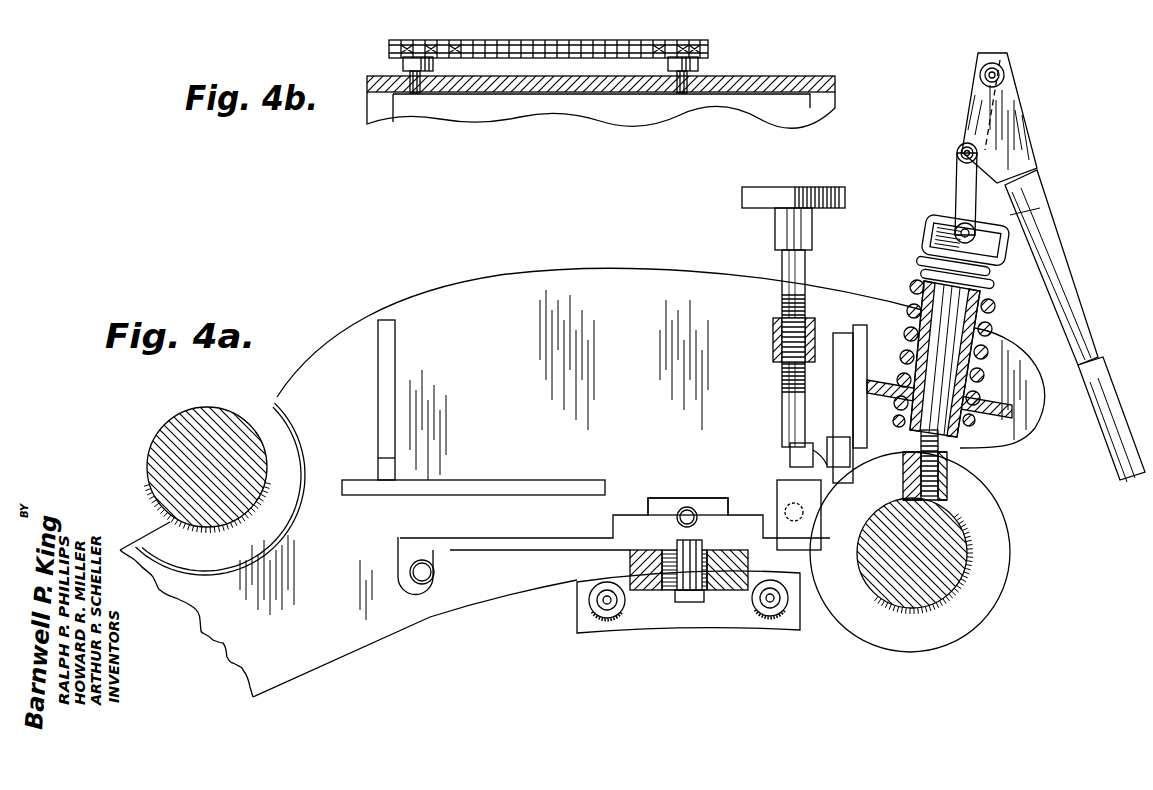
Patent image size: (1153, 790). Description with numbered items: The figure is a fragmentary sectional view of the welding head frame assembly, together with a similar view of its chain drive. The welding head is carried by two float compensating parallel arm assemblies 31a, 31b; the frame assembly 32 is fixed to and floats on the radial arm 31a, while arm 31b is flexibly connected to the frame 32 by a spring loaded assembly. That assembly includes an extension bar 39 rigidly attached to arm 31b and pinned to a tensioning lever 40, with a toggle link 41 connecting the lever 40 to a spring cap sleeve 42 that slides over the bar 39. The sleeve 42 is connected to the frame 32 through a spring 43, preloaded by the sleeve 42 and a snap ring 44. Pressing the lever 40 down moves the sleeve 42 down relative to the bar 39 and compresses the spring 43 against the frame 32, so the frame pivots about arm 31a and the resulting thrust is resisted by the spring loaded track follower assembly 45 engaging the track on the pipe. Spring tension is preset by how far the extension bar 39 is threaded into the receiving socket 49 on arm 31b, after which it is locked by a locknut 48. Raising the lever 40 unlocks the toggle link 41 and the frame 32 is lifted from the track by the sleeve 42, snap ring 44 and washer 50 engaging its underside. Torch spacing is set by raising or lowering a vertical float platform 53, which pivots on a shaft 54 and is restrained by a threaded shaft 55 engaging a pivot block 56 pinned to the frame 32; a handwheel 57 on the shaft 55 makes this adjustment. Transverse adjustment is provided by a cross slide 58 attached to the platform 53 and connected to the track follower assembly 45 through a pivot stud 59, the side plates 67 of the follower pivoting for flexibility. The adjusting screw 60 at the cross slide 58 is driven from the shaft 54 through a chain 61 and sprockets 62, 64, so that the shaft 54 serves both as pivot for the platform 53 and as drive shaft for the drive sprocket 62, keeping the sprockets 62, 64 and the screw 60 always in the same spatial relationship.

In FIG. 4a, the float compensating parallel arm assembly 31a is at (178, 462).
In FIG. 4a, the float compensating parallel arm assembly 31b is at (968, 567).
In FIG. 4a, the frame assembly 32 is at (447, 292).
In FIG. 4a, the extension bar 39 is at (1003, 70).
In FIG. 4a, the tensioning lever 40 is at (1060, 276).
In FIG. 4a, the toggle link 41 is at (965, 188).
In FIG. 4a, the spring cap sleeve 42 is at (928, 242).
In FIG. 4a, the spring 43 is at (995, 308).
In FIG. 4a, the snap ring 44 is at (955, 432).
In FIG. 4a, the track follower assembly 45 is at (643, 633).
In FIG. 4a, the locknut 48 is at (905, 470).
In FIG. 4a, the receiving socket 49 is at (945, 483).
In FIG. 4a, the washer 50 is at (898, 418).
In FIG. 4a, the vertical float platform 53 is at (545, 540).
In FIG. 4b, the shaft 54 is at (415, 93).
In FIG. 4a, the shaft 54 is at (416, 576).
In FIG. 4a, the threaded shaft 55 is at (797, 280).
In FIG. 4a, the pivot block 56 is at (773, 330).
In FIG. 4a, the handwheel 57 is at (838, 196).
In FIG. 4a, the cross slide 58 is at (672, 503).
In FIG. 4a, the pivot stud 59 is at (690, 602).
In FIG. 4b, the adjusting screw 60 is at (682, 93).
In FIG. 4a, the adjusting screw 60 is at (695, 514).
In FIG. 4b, the chain 61 is at (558, 40).
In FIG. 4b, the sprocket 62 is at (403, 64).
In FIG. 4b, the sprocket 64 is at (698, 64).
In FIG. 4a, the side plate 67 is at (585, 620).